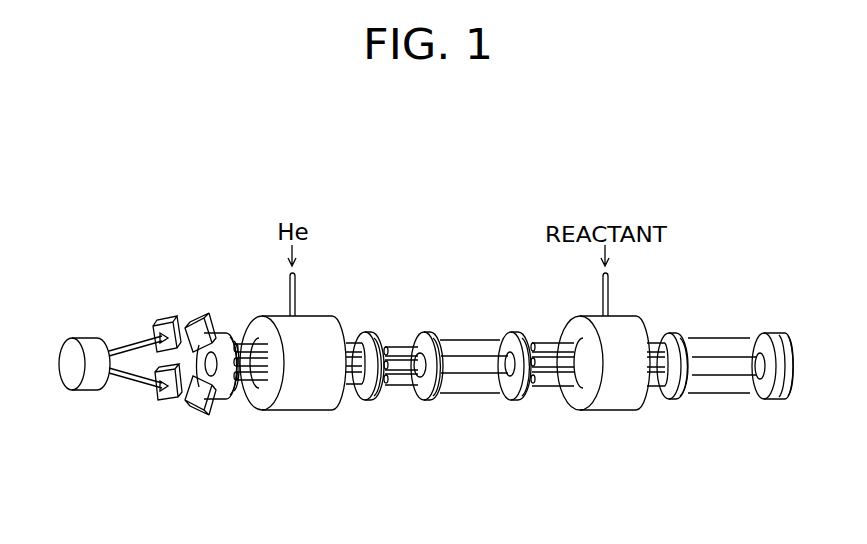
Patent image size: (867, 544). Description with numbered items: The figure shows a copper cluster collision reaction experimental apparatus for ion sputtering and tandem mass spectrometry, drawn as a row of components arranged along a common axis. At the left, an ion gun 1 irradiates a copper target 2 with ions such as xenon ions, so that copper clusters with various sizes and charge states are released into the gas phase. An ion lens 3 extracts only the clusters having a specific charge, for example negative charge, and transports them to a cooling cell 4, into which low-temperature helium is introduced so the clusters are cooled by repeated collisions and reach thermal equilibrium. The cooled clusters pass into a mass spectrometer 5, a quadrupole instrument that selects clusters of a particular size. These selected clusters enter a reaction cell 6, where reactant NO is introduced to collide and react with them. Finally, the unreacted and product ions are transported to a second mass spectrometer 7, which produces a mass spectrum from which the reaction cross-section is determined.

The ion gun 1 is at (87, 390).
The copper target 2 is at (170, 403).
The ion lens 3 is at (221, 397).
The cooling cell 4 is at (300, 410).
The mass spectrometer 5 is at (465, 390).
The reaction cell 6 is at (615, 413).
The mass spectrometer 7 is at (713, 397).